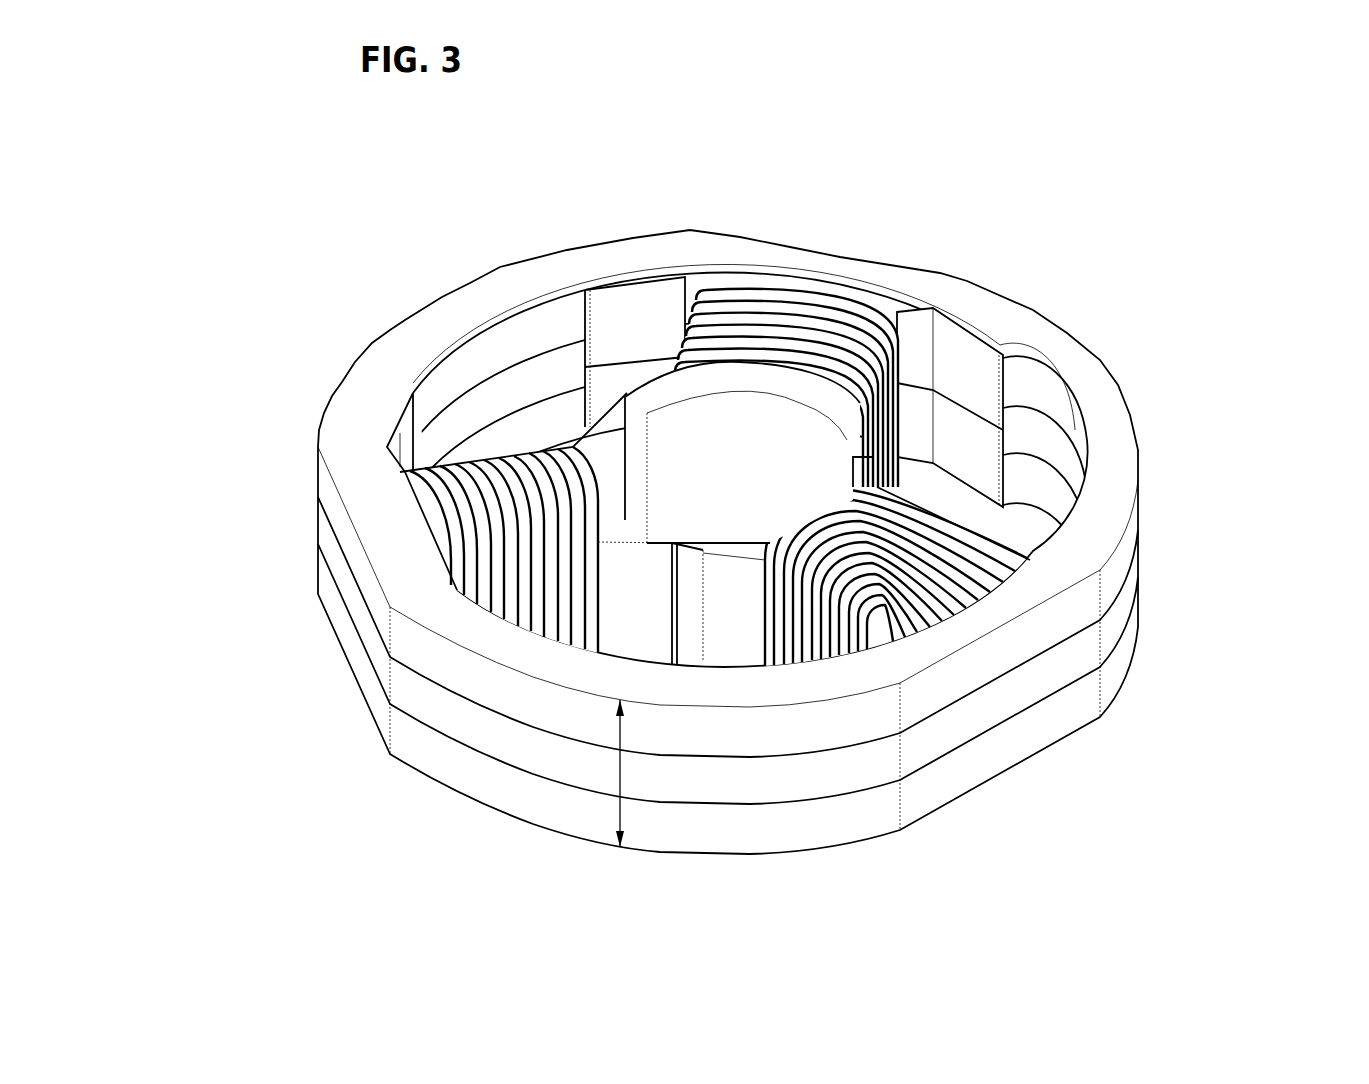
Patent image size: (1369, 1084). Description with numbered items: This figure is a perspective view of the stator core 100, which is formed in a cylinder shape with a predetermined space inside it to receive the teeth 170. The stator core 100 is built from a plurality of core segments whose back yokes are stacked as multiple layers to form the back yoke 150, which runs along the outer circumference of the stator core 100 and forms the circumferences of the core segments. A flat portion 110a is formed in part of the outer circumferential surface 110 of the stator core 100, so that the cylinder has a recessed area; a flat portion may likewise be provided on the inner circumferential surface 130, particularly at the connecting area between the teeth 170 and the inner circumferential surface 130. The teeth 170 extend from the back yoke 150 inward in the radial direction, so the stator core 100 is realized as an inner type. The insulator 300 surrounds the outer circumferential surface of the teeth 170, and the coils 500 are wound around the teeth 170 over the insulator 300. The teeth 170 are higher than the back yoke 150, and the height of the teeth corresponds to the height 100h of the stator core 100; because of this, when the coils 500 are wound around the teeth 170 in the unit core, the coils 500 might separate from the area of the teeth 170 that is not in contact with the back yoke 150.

The stator core 100 is at (213, 143).
The outer circumferential surface 110 is at (710, 600).
The flat portion 110a is at (977, 715).
The inner circumferential surface 130 is at (1047, 468).
The back yoke 150 is at (417, 598).
The teeth 170 is at (800, 447).
The insulator 300 is at (628, 300).
The coils 500 is at (813, 323).
The height of the stator core 100h is at (617, 770).